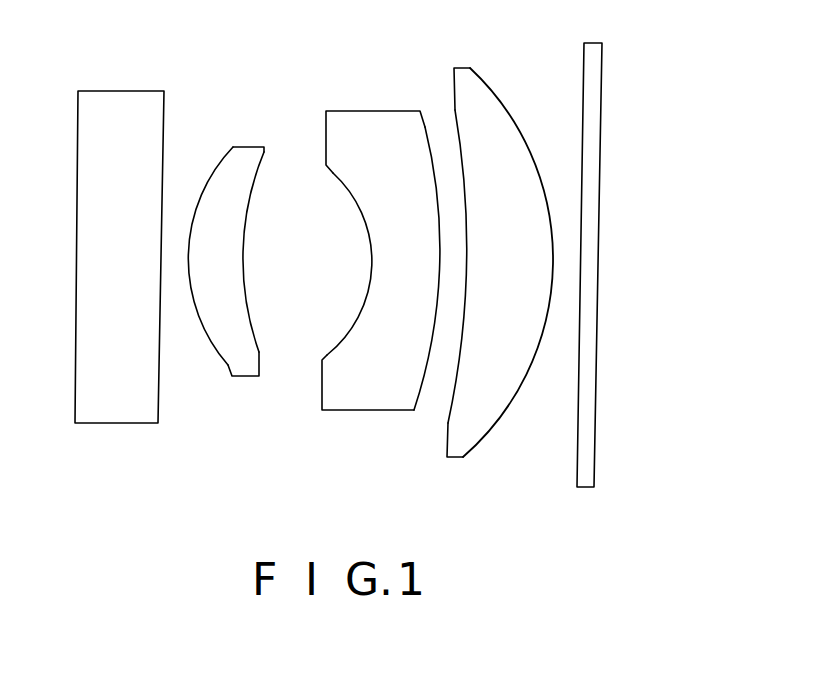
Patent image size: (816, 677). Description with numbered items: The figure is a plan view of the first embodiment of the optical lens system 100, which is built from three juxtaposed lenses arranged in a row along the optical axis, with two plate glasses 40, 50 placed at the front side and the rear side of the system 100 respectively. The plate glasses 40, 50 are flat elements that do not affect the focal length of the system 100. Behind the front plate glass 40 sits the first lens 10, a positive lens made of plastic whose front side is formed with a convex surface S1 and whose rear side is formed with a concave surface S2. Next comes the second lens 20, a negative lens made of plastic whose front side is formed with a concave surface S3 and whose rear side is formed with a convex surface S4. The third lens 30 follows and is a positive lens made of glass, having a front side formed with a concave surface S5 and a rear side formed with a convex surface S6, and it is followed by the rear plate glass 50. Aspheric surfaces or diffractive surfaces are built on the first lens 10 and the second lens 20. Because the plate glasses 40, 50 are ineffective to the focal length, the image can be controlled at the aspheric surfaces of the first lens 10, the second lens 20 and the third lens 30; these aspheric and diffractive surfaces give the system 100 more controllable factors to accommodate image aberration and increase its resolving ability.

The optical lens system 100 is at (618, 68).
The first lens 10 is at (221, 248).
The second lens 20 is at (368, 263).
The third lens 30 is at (502, 276).
The plate glass 40 is at (102, 412).
The plate glass 50 is at (595, 187).
The convex surface S1 is at (228, 153).
The concave surface S2 is at (253, 180).
The concave surface S3 is at (337, 173).
The convex surface S4 is at (425, 125).
The concave surface S5 is at (455, 108).
The convex surface S6 is at (513, 122).